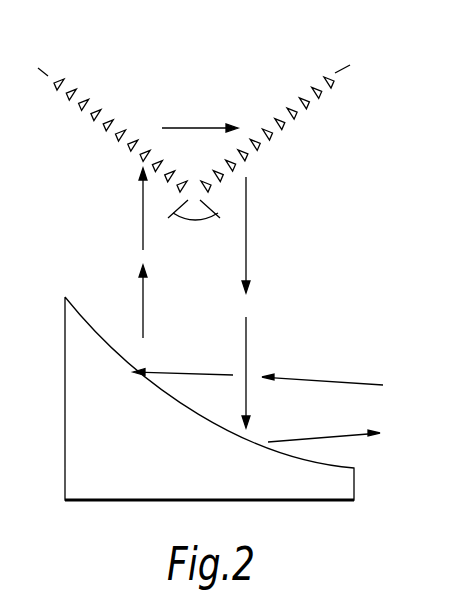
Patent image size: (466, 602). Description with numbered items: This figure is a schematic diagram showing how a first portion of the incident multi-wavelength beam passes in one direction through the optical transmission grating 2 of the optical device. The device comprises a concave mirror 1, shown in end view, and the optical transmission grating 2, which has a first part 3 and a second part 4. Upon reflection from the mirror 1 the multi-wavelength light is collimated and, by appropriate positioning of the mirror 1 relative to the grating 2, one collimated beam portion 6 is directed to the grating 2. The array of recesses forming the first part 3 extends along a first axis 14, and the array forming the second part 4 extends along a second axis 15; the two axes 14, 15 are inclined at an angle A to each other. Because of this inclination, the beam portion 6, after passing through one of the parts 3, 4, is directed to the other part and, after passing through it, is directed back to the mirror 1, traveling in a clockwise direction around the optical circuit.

The concave mirror 1 is at (297, 487).
The optical transmission grating 2 is at (316, 184).
The first part 3 is at (84, 108).
The second part 4 is at (303, 107).
The beam portion 6 is at (195, 128).
The first axis 14 is at (40, 68).
The second axis 15 is at (338, 72).
The angle A is at (193, 222).